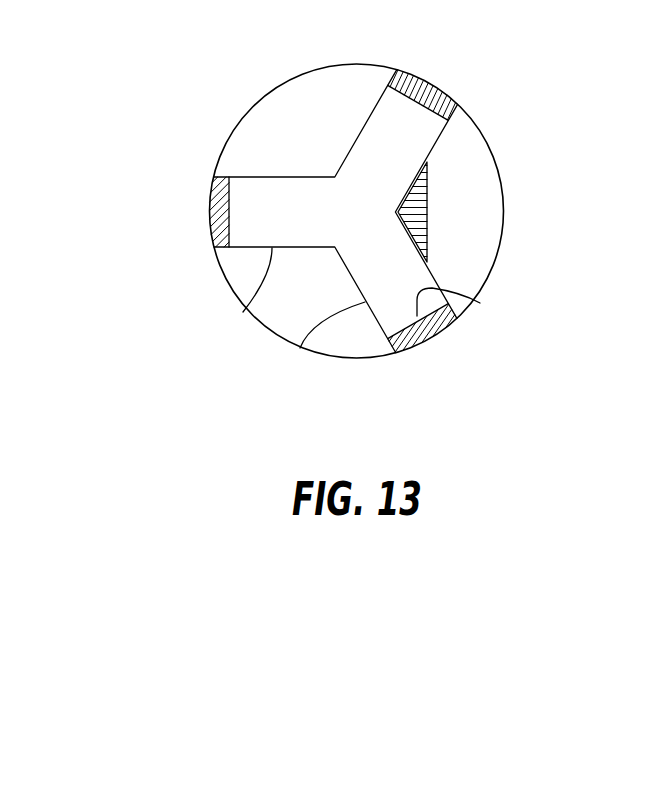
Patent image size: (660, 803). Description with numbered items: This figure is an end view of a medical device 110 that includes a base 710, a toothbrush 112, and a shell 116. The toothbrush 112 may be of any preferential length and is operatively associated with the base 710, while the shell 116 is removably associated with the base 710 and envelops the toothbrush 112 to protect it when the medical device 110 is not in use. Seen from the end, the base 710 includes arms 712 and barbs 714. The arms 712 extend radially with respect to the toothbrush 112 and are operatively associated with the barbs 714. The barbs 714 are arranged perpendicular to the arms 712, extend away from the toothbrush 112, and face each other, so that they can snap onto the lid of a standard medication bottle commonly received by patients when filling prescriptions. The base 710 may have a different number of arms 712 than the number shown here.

The medical device 110 is at (168, 119).
The shell 116 is at (495, 154).
The toothbrush 112 is at (462, 211).
The base 710 is at (340, 111).
The arms 712 is at (243, 312).
The barbs 714 is at (480, 303).